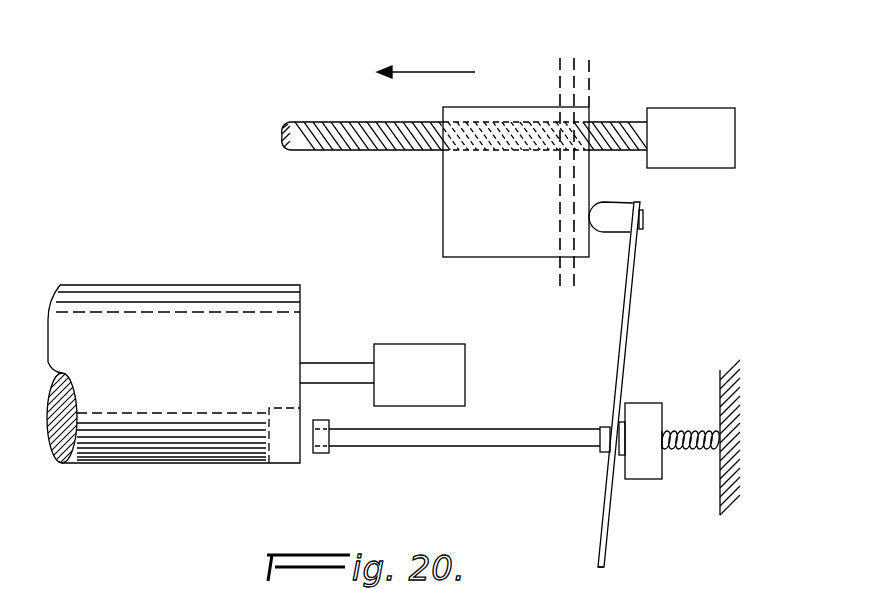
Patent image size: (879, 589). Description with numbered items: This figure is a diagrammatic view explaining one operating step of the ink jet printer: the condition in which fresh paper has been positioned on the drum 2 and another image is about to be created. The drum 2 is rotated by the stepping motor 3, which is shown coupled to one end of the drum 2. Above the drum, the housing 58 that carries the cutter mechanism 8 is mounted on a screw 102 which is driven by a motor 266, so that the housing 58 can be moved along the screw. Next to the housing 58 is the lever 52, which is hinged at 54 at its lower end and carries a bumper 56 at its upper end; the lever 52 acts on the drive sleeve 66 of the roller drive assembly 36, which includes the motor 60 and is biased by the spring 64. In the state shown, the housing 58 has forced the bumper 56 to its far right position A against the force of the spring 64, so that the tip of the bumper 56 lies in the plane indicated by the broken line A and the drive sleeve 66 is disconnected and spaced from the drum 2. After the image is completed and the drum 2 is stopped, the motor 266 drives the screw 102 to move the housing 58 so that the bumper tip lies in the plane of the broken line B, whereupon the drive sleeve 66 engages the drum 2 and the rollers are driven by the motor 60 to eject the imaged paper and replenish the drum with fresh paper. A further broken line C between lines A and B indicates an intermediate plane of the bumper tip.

The rotatable drum 2 is at (168, 285).
The stepping motor 3 is at (410, 344).
The cutter mechanism 8 is at (500, 101).
The roller drive assembly 36 is at (682, 384).
The lever 52 is at (628, 318).
The hinge 54 is at (603, 557).
The bumper 56 is at (617, 232).
The housing 58 is at (443, 190).
The motor 60 is at (645, 403).
The spring 64 is at (685, 450).
The drive sleeve 66 is at (318, 419).
The screw 102 is at (372, 122).
The motor 266 is at (697, 108).
The position A is at (591, 66).
The position B is at (560, 58).
The position C is at (575, 56).